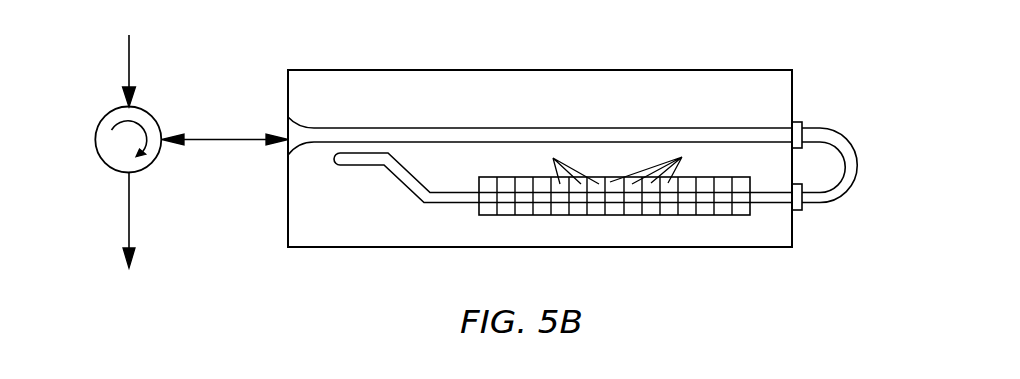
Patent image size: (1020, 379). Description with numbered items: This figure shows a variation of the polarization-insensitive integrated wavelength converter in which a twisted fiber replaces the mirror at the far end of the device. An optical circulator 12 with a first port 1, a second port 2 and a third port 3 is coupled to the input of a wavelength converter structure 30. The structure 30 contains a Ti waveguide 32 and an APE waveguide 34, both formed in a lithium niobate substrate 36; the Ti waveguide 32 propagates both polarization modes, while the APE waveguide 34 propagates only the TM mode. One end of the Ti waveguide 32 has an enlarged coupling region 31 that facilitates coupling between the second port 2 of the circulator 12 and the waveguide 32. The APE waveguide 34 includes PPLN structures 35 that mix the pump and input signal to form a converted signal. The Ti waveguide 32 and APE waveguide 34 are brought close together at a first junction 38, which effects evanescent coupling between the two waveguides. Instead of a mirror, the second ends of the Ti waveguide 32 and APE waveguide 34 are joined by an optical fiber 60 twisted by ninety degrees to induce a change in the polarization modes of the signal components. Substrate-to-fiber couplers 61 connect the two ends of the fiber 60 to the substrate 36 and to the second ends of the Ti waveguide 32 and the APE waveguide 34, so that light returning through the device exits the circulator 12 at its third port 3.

The optical circulator 12 is at (96, 132).
The first port 1 is at (121, 73).
The second port 2 is at (225, 127).
The third port 3 is at (134, 221).
The wavelength converter structure 30 is at (540, 134).
The enlarged coupling region 31 is at (348, 93).
The Ti waveguide 32 is at (553, 115).
The APE waveguide 34 is at (585, 230).
The PPLN structures 35 is at (553, 158).
The LiNbO3 substrate 36 is at (398, 234).
The first junction 38 is at (546, 180).
The optical fiber 60 is at (848, 182).
The substrate-to-fiber couplers 61 is at (825, 172).